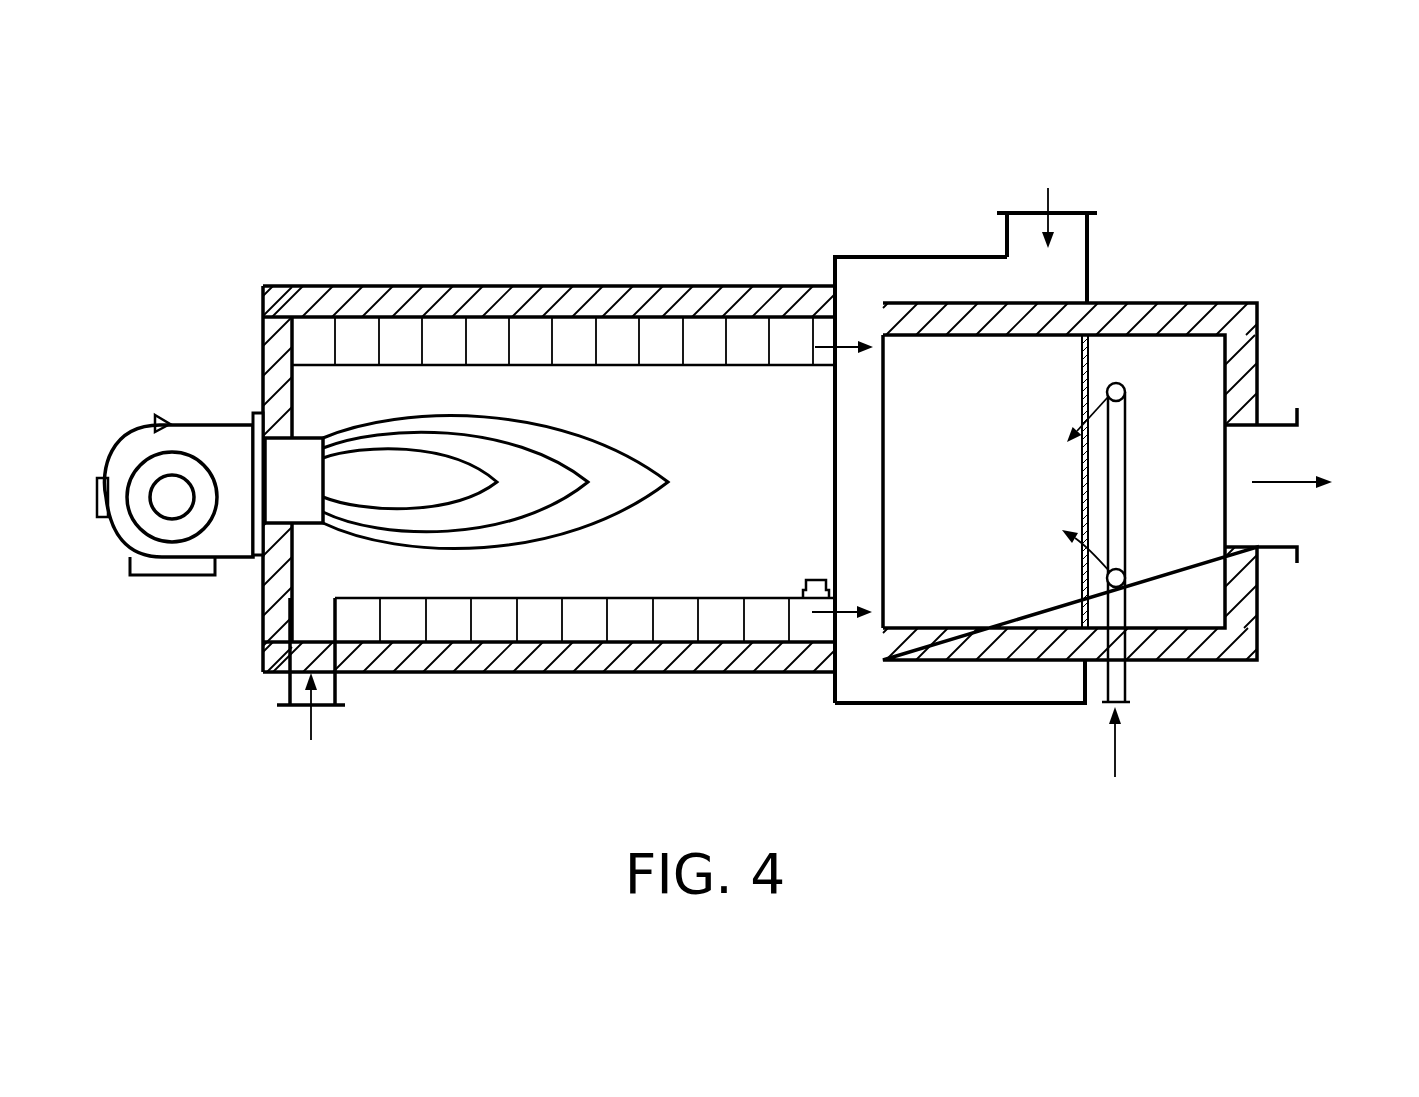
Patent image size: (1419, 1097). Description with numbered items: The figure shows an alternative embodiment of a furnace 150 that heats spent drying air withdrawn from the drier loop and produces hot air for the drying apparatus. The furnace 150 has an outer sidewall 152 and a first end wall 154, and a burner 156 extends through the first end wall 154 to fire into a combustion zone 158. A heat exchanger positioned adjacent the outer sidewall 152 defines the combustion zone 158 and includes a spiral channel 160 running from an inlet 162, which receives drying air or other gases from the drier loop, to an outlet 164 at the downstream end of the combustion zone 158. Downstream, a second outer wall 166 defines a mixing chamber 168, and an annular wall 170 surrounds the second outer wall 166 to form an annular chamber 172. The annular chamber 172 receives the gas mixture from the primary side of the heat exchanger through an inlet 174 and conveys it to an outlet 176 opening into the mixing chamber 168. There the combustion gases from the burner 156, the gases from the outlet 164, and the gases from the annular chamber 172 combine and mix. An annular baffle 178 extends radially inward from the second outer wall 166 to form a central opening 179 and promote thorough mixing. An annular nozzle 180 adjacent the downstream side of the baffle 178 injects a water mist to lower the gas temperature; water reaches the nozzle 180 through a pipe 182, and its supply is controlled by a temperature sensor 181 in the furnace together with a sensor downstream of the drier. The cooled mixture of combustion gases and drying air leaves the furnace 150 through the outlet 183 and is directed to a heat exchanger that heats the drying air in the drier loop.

The furnace 150 is at (751, 131).
The outer sidewall 152 is at (716, 287).
The first end wall 154 is at (262, 303).
The burner 156 is at (212, 425).
The combustion zone 158 is at (640, 412).
The spiral channel 160 is at (445, 333).
The inlet 162 is at (288, 685).
The outlet 164 is at (838, 355).
The second outer wall 166 is at (1107, 303).
The mixing chamber 168 is at (1018, 590).
The annular wall 170 is at (869, 257).
The annular chamber 172 is at (940, 273).
The inlet 174 is at (1087, 245).
The outlet 176 is at (865, 325).
The baffle 178 is at (1088, 362).
The central opening 179 is at (1083, 478).
The nozzle 180 is at (1125, 580).
The temperature sensor 181 is at (816, 579).
The pipe 182 is at (1125, 683).
The outlet 183 is at (1279, 423).